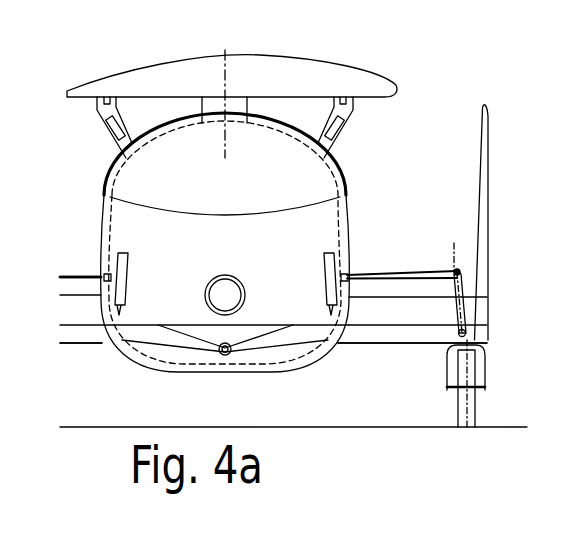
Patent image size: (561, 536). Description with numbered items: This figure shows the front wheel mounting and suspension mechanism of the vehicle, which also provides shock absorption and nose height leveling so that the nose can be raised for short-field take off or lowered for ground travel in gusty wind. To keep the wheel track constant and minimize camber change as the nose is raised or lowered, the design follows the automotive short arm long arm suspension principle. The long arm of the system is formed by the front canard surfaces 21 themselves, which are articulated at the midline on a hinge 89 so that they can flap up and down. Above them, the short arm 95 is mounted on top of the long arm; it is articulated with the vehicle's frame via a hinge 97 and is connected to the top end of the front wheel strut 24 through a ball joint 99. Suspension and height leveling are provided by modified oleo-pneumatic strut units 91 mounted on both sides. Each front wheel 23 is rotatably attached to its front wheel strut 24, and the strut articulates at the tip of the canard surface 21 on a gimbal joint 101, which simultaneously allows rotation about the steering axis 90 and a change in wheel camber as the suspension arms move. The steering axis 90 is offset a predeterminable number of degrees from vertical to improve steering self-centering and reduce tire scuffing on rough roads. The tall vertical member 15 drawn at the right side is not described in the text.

The rotor blade 15 is at (485, 223).
The canard surfaces 21 is at (72, 343).
The front wheels 23 is at (470, 415).
The front wheel strut 24 is at (457, 318).
The hinge 89 is at (232, 354).
The steering axis 90 is at (454, 228).
The oleo-pneumatic strut units 91 is at (128, 270).
The short arm 95 is at (88, 276).
The hinge 97 is at (353, 272).
The ball joint 99 is at (459, 271).
The gimbal joint 101 is at (467, 334).